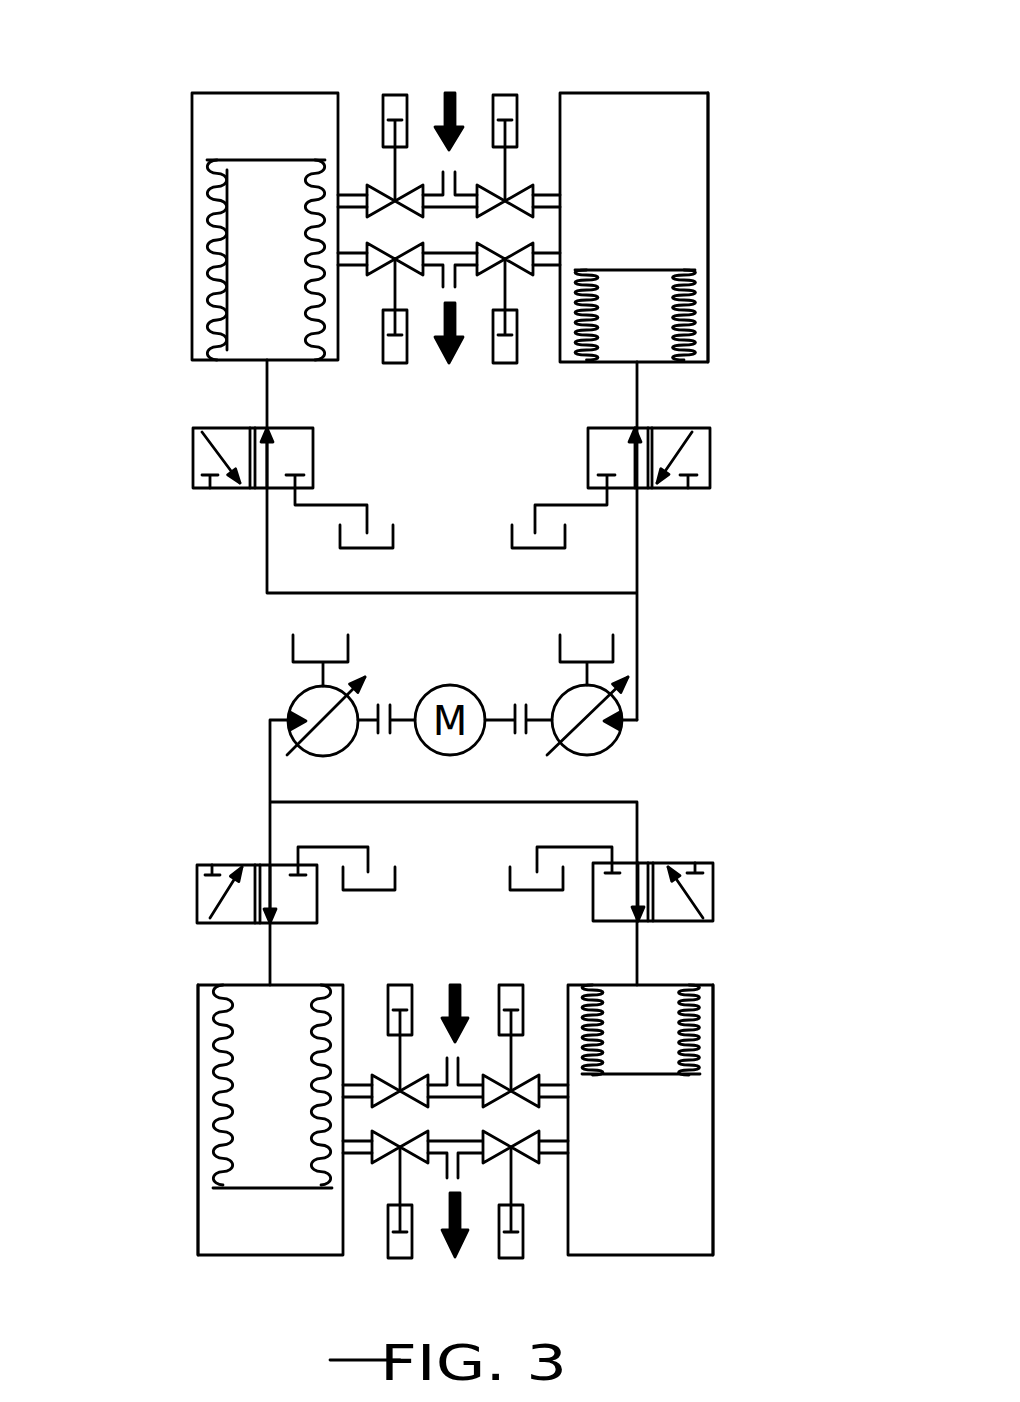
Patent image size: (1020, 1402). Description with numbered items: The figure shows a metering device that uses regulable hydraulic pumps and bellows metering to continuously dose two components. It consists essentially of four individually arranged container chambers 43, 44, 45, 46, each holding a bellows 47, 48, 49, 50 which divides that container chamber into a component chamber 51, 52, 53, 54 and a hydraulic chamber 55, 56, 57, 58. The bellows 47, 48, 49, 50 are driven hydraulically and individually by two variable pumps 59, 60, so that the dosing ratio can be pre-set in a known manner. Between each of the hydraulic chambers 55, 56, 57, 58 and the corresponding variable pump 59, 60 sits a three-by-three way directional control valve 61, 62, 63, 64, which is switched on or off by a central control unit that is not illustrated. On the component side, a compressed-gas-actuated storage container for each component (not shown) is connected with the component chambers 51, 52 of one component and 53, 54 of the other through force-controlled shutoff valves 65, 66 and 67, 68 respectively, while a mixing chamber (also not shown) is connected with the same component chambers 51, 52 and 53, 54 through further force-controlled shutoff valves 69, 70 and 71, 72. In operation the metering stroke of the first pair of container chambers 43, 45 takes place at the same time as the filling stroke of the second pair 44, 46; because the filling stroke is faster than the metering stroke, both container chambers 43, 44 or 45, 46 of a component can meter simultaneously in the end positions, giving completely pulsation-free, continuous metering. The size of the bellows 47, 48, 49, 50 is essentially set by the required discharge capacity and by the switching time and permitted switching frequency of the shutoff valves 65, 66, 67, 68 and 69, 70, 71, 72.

The container chamber 43 is at (192, 183).
The container chamber 44 is at (708, 120).
The container chamber 45 is at (198, 1205).
The container chamber 46 is at (713, 1227).
The bellows 47 is at (215, 277).
The bellows 48 is at (697, 293).
The bellows 49 is at (215, 1140).
The bellows 50 is at (702, 1035).
The component chamber 51 is at (303, 110).
The component chamber 52 is at (618, 113).
The component chamber 53 is at (228, 1232).
The component chamber 54 is at (603, 1237).
The hydraulic chamber 55 is at (252, 325).
The hydraulic chamber 56 is at (647, 327).
The hydraulic chamber 57 is at (252, 1053).
The hydraulic chamber 58 is at (653, 1000).
The variable pump 59 is at (290, 705).
The variable pump 60 is at (620, 740).
The 3/3 way directional control valve 61 is at (193, 455).
The 3/3 way directional control valve 62 is at (710, 460).
The 3/3 way directional control valve 63 is at (197, 890).
The 3/3 way directional control valve 64 is at (713, 893).
The force-controlled shutoff valve 65 is at (368, 185).
The force-controlled shutoff valve 66 is at (488, 182).
The force-controlled shutoff valve 67 is at (380, 1073).
The force-controlled shutoff valve 68 is at (535, 1073).
The force-controlled shutoff valve 69 is at (412, 277).
The force-controlled shutoff valve 70 is at (527, 243).
The force-controlled shutoff valve 71 is at (418, 1165).
The force-controlled shutoff valve 72 is at (497, 1165).